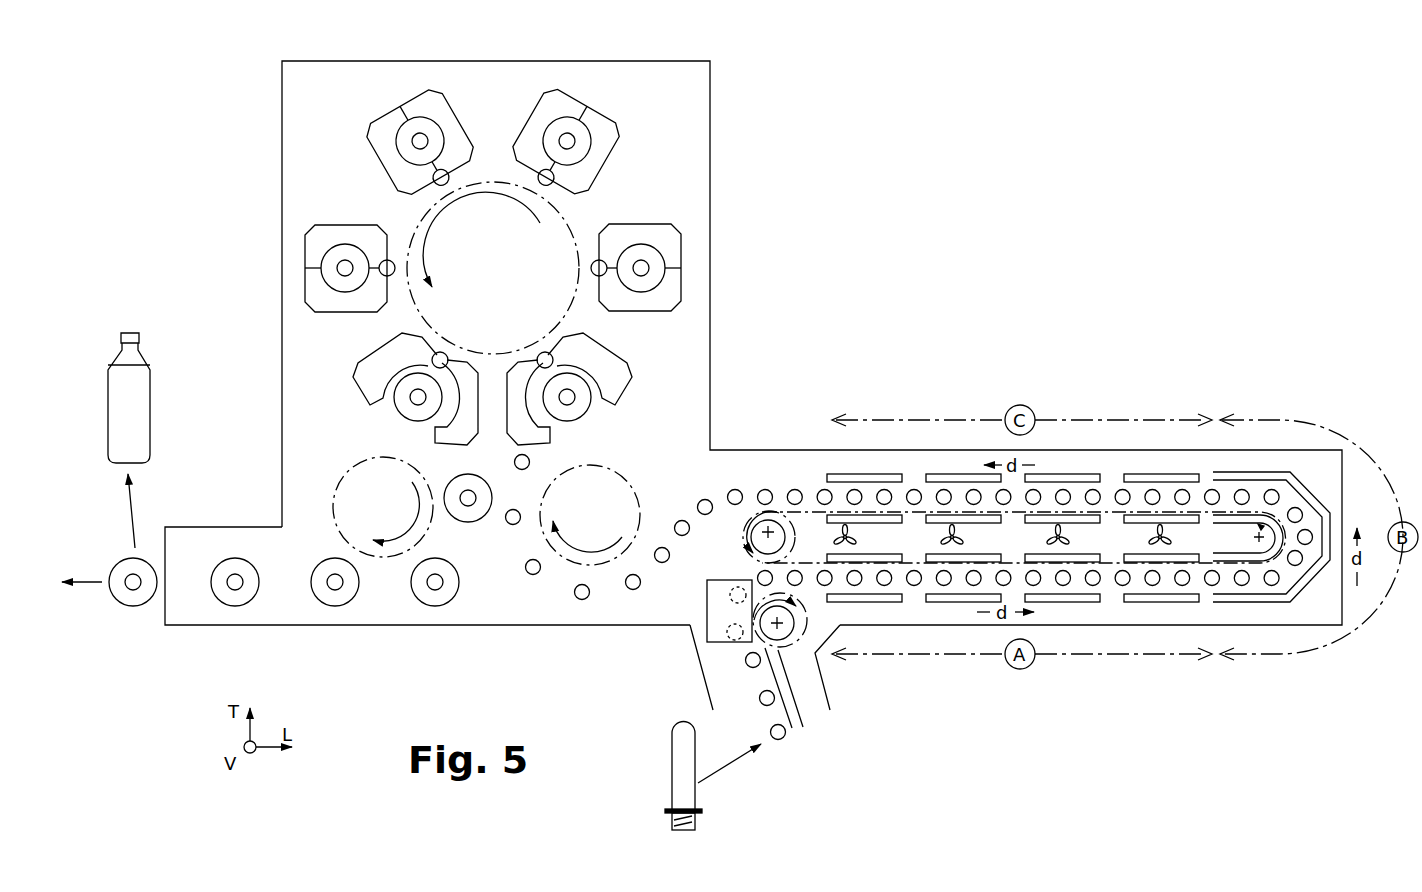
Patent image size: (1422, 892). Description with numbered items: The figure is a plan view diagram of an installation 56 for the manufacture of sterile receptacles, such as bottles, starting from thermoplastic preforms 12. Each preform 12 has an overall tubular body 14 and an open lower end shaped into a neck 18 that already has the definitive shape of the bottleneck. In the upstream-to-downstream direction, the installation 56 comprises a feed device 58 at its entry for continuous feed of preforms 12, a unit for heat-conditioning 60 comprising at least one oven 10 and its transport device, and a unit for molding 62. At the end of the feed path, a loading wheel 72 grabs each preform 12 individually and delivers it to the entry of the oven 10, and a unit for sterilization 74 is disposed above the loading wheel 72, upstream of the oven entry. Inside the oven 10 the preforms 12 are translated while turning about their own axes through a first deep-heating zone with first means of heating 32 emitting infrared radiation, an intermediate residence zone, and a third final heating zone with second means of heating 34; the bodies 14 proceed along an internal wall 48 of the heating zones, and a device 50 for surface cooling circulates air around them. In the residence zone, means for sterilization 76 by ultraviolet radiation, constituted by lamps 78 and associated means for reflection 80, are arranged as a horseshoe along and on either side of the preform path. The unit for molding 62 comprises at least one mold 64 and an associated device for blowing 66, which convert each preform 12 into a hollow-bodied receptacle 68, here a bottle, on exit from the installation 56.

The oven 10 is at (1142, 445).
The preform 12 is at (679, 778).
The body 14 is at (678, 751).
The neck 18 is at (700, 818).
The first means of heating 32 is at (962, 610).
The second means of heating 34 is at (1081, 473).
The internal wall 48 is at (957, 520).
The device for cooling 50 is at (1065, 536).
The installation 56 is at (917, 310).
The feed device 58 is at (810, 744).
The unit for heat-conditioning 60 is at (1145, 608).
The unit for molding 62 is at (682, 170).
The mold 64 is at (522, 138).
The device for blowing 66 is at (692, 250).
The hollow-bodied receptacle 68 is at (135, 407).
The loading wheel 72 is at (797, 633).
The unit for sterilization 74 is at (706, 603).
The means for sterilization 76 is at (1305, 487).
The lamps 78 is at (1320, 505).
The means for reflection 80 is at (1255, 556).